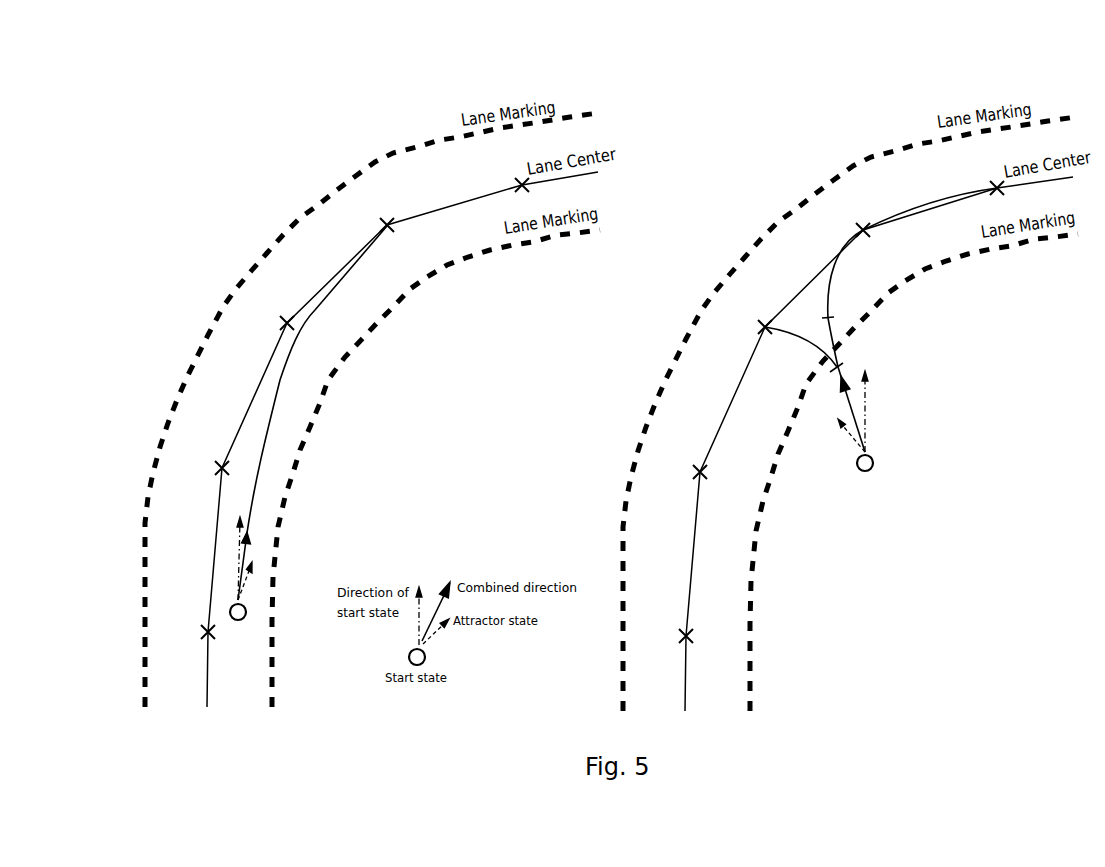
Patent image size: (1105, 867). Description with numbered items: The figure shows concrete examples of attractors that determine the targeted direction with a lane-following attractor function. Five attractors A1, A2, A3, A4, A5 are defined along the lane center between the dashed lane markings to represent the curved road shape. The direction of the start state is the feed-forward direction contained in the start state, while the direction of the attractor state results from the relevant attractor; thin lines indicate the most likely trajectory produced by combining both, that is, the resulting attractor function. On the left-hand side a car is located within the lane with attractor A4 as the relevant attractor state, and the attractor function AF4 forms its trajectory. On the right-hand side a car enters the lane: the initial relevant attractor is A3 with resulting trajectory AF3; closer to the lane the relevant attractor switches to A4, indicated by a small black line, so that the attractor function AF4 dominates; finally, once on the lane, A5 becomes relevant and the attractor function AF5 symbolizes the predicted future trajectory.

The attractor A1 is at (456, 638).
The attractor A2 is at (469, 480).
The attractor A3 is at (534, 334).
The attractor A4 is at (633, 231).
The attractor A5 is at (769, 193).
The attractor function AF3 is at (815, 389).
The attractor function AF4 is at (538, 413).
The attractor function AF5 is at (912, 253).